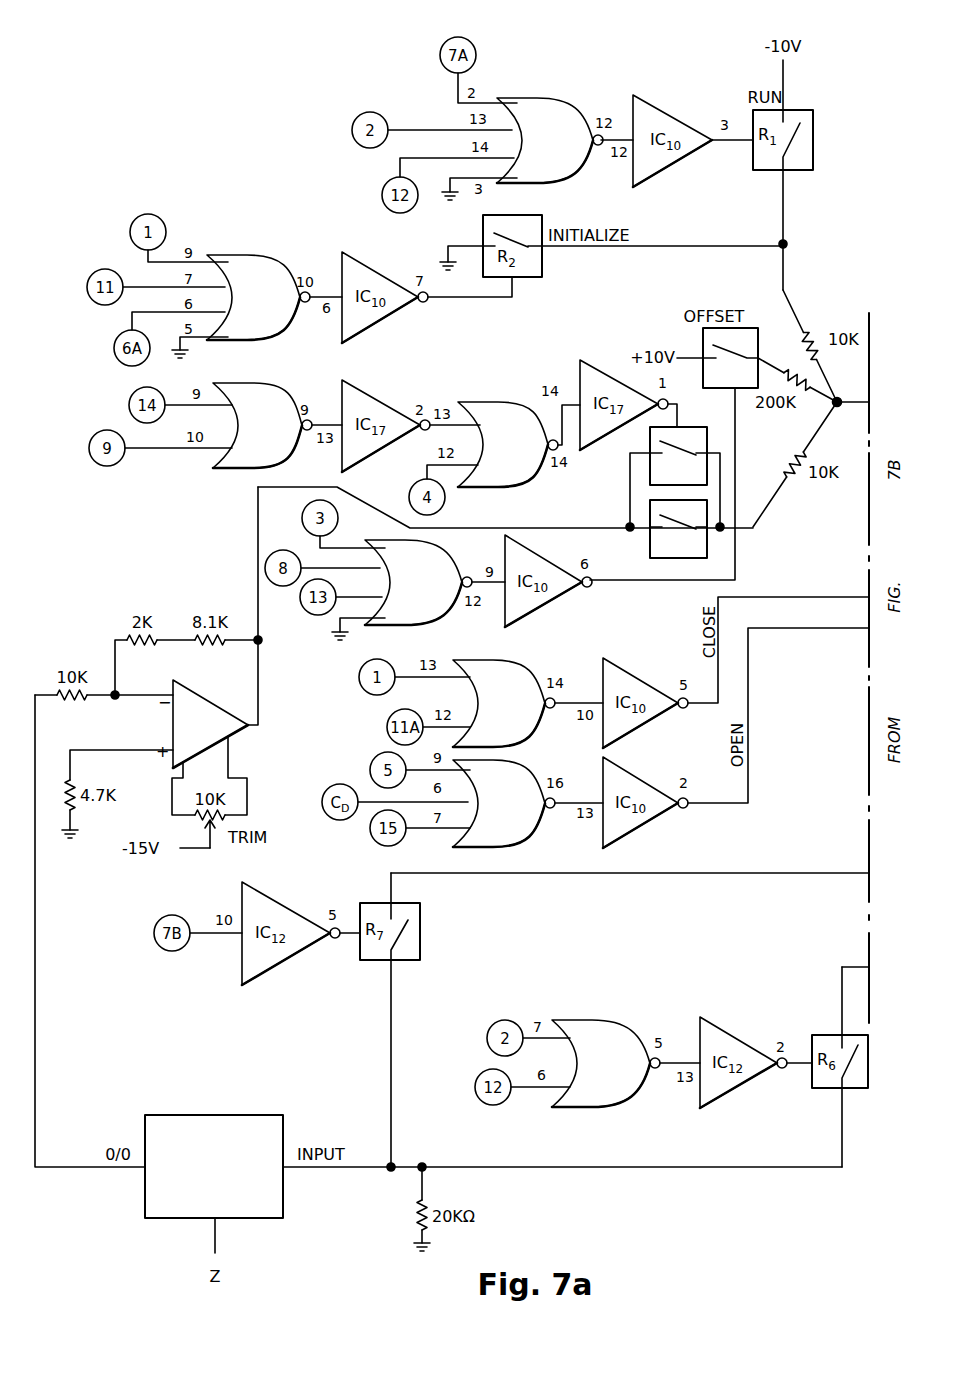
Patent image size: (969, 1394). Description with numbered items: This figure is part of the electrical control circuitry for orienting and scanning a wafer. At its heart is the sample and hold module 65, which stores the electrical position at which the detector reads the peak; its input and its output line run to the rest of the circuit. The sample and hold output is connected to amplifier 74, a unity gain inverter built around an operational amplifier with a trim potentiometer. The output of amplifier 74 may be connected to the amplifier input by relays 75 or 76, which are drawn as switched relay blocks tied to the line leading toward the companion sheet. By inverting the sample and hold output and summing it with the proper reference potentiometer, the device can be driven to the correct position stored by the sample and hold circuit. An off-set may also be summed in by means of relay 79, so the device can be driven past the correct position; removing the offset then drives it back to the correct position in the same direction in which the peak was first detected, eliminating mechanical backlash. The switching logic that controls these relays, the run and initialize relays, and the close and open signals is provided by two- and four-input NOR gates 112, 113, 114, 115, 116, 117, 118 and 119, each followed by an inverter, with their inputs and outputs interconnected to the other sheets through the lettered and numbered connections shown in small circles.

The NOR gate 113 is at (545, 98).
The NOR gate 114 is at (236, 255).
The NOR gate 112 is at (252, 383).
The NOR gate 115 is at (483, 402).
The NOR gate 116 is at (433, 622).
The NOR gate 117 is at (507, 660).
The NOR gate 118 is at (517, 838).
The NOR gate 119 is at (593, 1020).
The amplifier 74 is at (190, 690).
The relay 75 is at (650, 433).
The relay 76 is at (650, 547).
The relay 79 is at (701, 370).
The sample and hold module 65 is at (150, 1218).